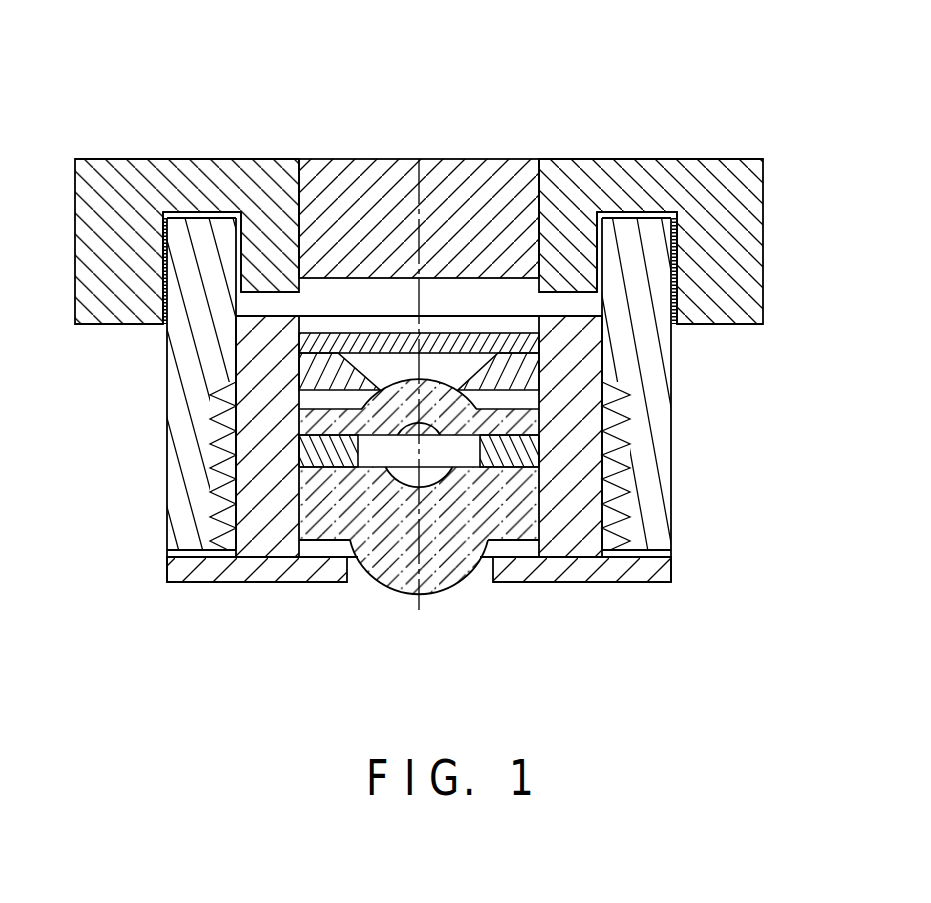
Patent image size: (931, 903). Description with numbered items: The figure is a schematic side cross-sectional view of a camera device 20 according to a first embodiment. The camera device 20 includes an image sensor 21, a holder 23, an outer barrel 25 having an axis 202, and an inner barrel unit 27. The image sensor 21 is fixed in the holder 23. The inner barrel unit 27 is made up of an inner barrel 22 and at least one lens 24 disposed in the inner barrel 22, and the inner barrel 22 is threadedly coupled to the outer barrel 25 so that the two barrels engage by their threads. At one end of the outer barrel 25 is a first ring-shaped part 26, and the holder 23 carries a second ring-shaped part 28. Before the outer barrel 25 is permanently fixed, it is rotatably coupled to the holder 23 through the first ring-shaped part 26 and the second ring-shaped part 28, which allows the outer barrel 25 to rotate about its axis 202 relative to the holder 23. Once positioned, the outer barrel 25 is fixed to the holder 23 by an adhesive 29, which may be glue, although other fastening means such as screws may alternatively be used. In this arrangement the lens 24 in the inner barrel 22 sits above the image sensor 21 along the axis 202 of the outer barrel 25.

The camera device 20 is at (452, 31).
The axis 202 is at (419, 159).
The image sensor 21 is at (505, 182).
The inner barrel 22 is at (575, 365).
The holder 23 is at (647, 177).
The lens 24 is at (392, 590).
The outer barrel 25 is at (652, 445).
The first ring-shaped part 26 is at (645, 248).
The inner barrel unit 27 is at (618, 592).
The second ring-shaped part 28 is at (732, 243).
The adhesive 29 is at (163, 312).